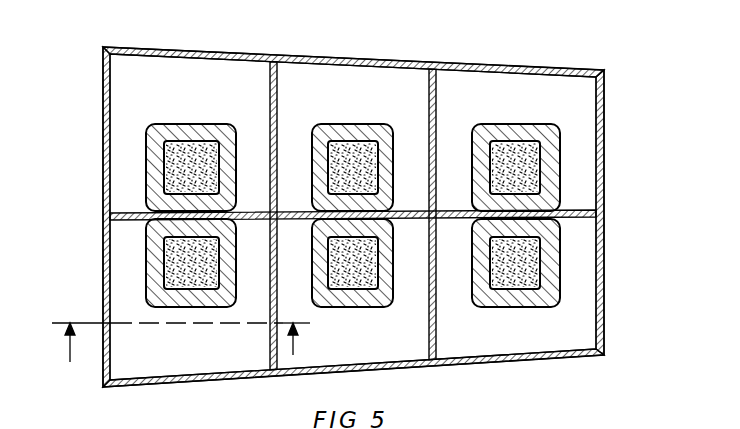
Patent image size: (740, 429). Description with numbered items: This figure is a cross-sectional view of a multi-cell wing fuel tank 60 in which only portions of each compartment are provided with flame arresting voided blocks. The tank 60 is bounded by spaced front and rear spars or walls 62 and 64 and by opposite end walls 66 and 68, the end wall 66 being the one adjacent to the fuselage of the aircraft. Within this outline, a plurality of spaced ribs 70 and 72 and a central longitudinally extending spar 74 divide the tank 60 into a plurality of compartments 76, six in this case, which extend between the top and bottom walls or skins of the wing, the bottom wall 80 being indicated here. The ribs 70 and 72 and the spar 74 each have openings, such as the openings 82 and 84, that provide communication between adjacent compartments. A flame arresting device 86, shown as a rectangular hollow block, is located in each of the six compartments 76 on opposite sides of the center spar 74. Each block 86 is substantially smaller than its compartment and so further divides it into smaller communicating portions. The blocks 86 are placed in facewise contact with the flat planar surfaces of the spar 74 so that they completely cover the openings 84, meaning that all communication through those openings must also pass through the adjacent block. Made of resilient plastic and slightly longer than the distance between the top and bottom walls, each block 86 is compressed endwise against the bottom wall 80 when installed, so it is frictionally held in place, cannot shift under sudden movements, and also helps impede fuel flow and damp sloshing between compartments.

The multi-cell wing fuel tank 60 is at (612, 186).
The front spar 62 is at (478, 66).
The rear spar 64 is at (493, 366).
The end wall 66 is at (103, 148).
The end wall 68 is at (604, 295).
The rib 70 is at (271, 352).
The rib 72 is at (437, 349).
The central longitudinally extending spar 74 is at (596, 221).
The compartment 76 is at (152, 99).
The bottom wall 80 is at (170, 362).
The opening 82 is at (277, 138).
The opening 84 is at (185, 212).
The flame arresting device 86 is at (207, 121).